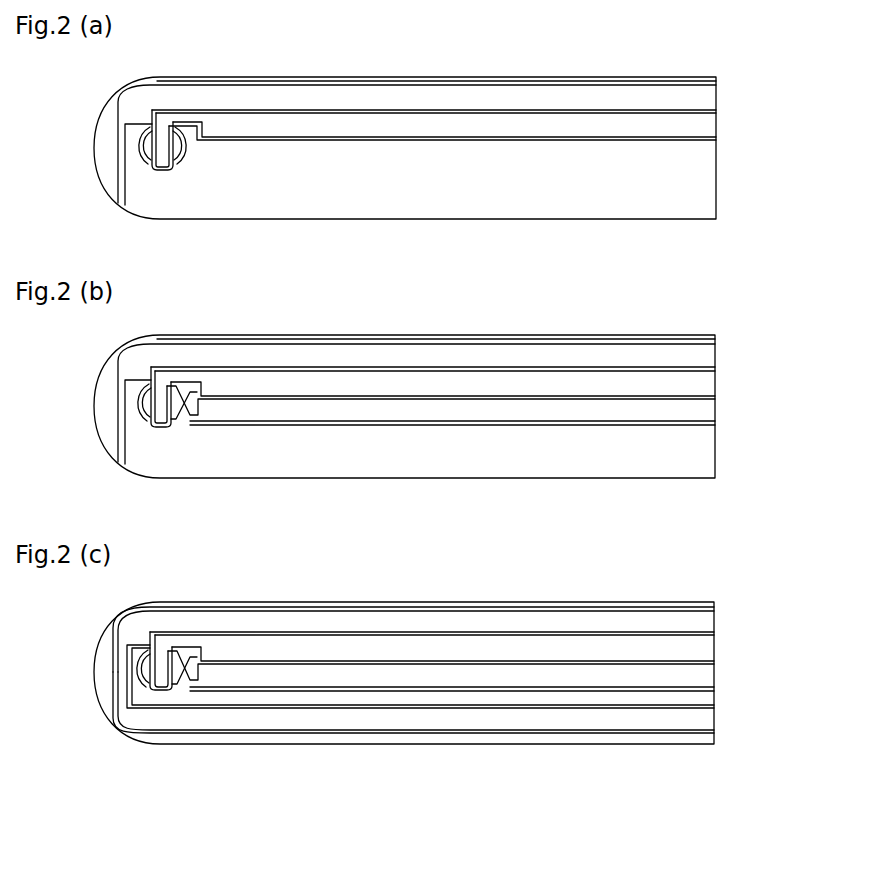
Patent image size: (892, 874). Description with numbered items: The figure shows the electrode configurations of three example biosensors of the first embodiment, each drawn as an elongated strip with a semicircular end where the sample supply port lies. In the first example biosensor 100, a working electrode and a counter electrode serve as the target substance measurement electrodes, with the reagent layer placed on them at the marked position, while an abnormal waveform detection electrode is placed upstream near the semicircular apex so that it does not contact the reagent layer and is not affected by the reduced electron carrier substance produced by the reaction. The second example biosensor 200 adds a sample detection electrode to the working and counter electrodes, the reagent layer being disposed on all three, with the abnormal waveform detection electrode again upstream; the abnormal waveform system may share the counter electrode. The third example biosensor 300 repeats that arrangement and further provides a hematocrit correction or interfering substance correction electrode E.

The biosensor 100 is at (580, 64).
The biosensor 200 is at (580, 328).
The biosensor 300 is at (580, 592).
The hematocrit correction electrode or interfering substance correction electrode E is at (705, 722).